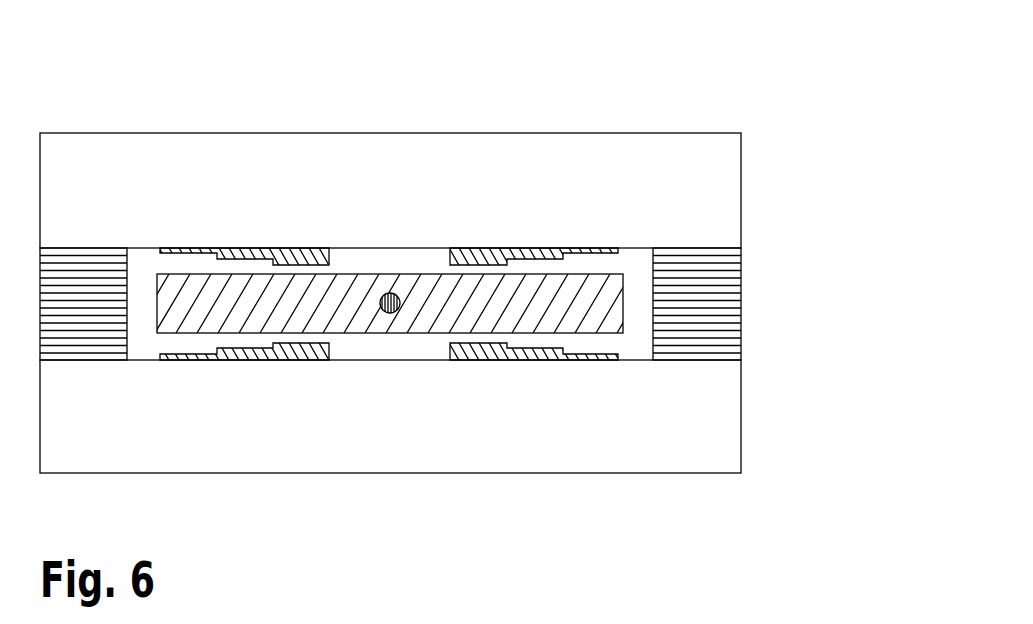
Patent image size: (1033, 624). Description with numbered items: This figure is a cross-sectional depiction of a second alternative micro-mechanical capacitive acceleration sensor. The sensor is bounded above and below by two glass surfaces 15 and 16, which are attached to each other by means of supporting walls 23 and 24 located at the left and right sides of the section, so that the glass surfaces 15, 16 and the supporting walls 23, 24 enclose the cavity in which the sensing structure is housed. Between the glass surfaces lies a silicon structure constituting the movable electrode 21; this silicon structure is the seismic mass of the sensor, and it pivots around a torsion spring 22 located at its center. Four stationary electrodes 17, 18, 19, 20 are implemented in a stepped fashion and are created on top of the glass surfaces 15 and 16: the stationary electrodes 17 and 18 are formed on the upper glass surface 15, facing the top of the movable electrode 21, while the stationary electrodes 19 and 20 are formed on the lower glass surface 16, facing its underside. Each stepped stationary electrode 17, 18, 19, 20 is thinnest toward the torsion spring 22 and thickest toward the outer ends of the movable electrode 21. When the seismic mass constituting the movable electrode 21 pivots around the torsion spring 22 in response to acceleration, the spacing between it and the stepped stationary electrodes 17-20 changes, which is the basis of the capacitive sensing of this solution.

The glass surface 15 is at (741, 200).
The glass surface 16 is at (741, 437).
The stationary electrode 17 is at (241, 248).
The stationary electrode 18 is at (524, 248).
The stationary electrode 19 is at (235, 360).
The stationary electrode 20 is at (618, 357).
The movable electrode 21 is at (624, 291).
The torsion spring 22 is at (391, 293).
The supporting wall 23 is at (82, 248).
The supporting wall 24 is at (741, 298).